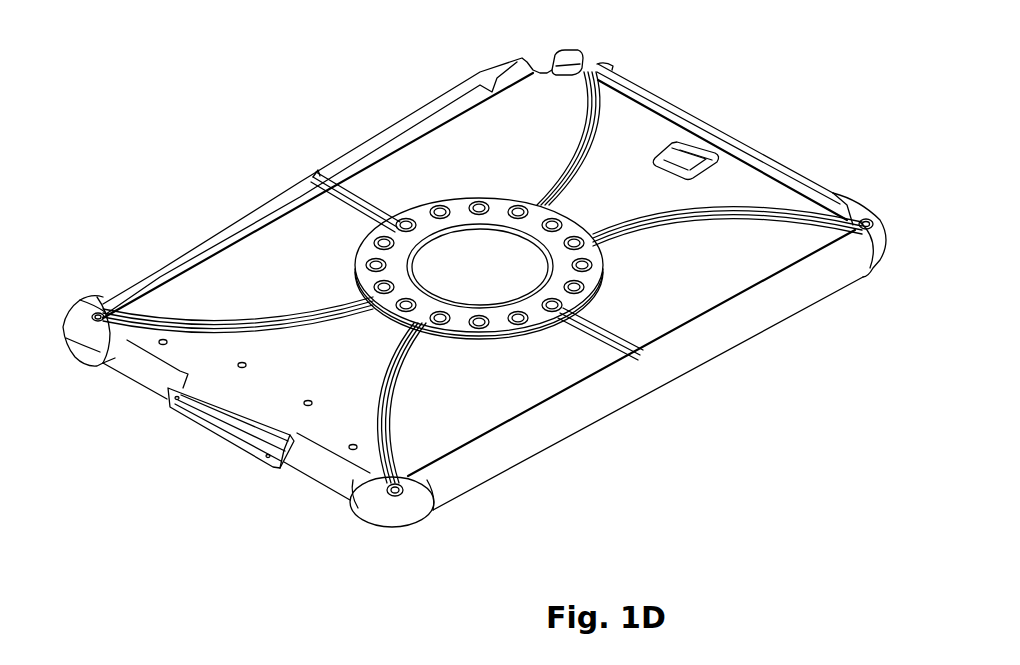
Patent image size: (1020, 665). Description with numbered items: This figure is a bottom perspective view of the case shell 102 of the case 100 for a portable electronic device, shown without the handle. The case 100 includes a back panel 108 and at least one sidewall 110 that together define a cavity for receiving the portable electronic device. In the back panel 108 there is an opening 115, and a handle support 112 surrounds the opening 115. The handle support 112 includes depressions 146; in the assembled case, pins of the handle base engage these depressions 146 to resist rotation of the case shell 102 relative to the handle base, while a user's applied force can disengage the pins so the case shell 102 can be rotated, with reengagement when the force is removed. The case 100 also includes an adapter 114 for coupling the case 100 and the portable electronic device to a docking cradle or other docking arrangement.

The case 100 is at (79, 112).
The case shell 102 is at (363, 512).
The back panel 108 is at (635, 145).
The sidewall 110 is at (728, 341).
The handle support 112 is at (428, 225).
The adapter 114 is at (223, 430).
The opening 115 is at (467, 272).
The depressions 146 is at (363, 257).